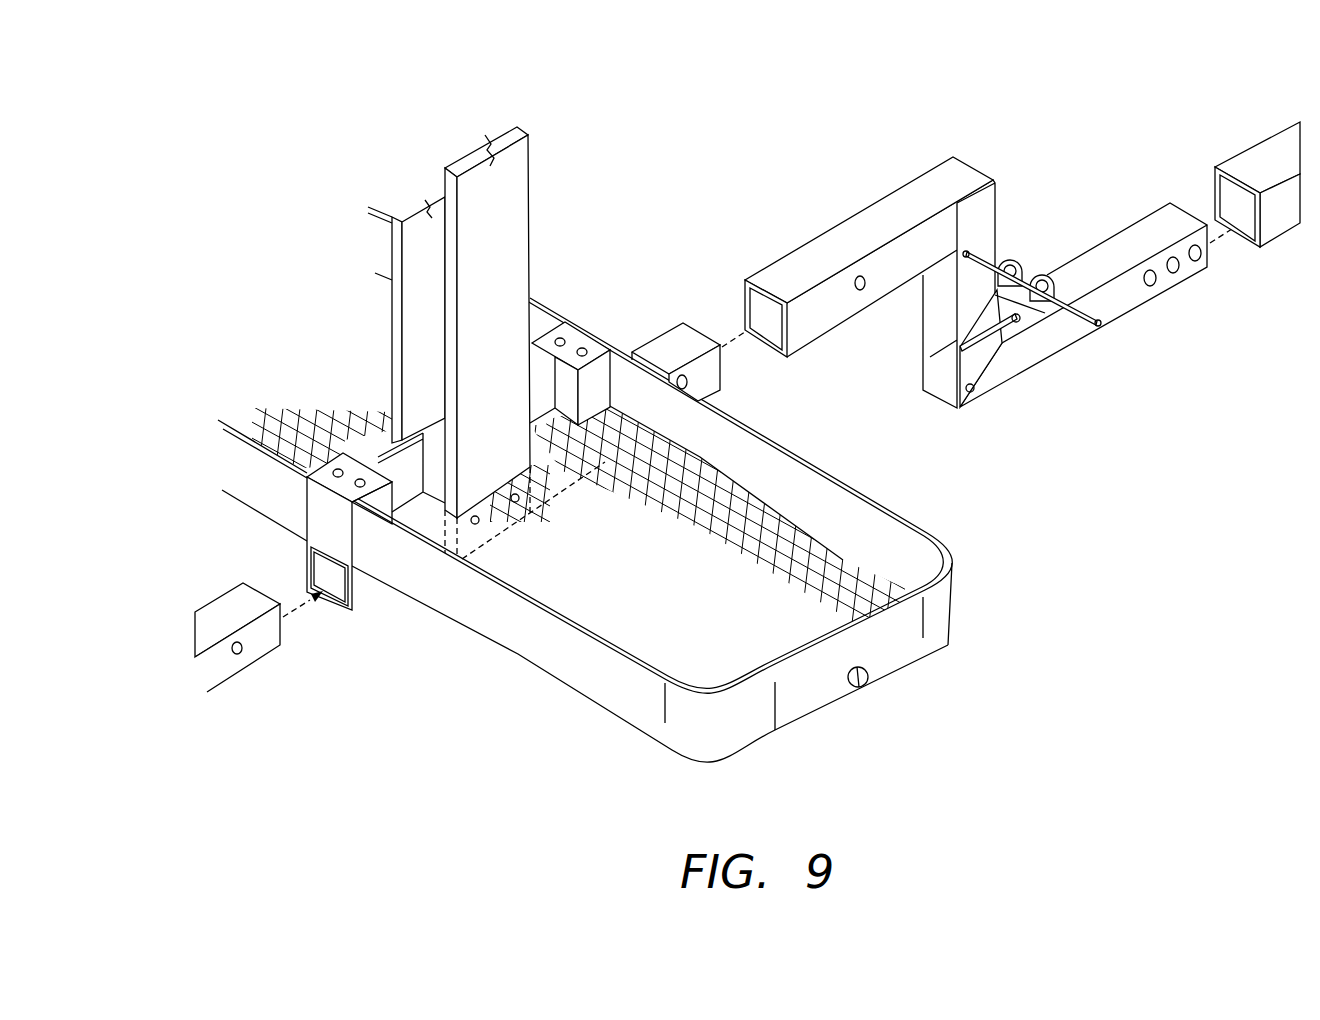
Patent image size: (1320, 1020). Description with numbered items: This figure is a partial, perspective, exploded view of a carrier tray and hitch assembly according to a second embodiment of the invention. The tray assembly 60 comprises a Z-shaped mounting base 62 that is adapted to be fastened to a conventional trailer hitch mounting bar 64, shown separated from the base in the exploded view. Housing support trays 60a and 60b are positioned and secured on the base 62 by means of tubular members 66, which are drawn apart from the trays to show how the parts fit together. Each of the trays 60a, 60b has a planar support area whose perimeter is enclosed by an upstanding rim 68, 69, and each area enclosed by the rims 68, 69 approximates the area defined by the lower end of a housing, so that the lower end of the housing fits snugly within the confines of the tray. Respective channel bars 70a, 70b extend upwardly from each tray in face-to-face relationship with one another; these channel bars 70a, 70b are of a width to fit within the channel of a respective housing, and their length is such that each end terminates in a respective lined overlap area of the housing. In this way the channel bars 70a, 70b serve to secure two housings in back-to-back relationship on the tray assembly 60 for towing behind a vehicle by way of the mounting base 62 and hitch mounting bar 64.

The tray assembly 60 is at (742, 112).
The housing support tray 60a is at (804, 548).
The housing support tray 60b is at (298, 420).
The Z-shaped mounting base 62 is at (940, 166).
The trailer hitch mounting bar 64 is at (1268, 140).
The tubular member 66 is at (258, 653).
The upstanding rim 68 is at (517, 657).
The upstanding rim 69 is at (240, 503).
The channel bar 70a is at (531, 197).
The channel bar 70b is at (405, 213).